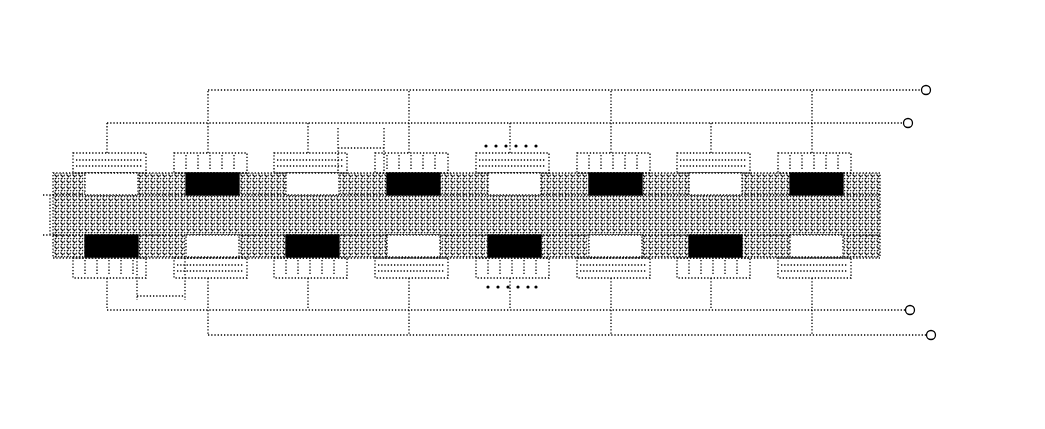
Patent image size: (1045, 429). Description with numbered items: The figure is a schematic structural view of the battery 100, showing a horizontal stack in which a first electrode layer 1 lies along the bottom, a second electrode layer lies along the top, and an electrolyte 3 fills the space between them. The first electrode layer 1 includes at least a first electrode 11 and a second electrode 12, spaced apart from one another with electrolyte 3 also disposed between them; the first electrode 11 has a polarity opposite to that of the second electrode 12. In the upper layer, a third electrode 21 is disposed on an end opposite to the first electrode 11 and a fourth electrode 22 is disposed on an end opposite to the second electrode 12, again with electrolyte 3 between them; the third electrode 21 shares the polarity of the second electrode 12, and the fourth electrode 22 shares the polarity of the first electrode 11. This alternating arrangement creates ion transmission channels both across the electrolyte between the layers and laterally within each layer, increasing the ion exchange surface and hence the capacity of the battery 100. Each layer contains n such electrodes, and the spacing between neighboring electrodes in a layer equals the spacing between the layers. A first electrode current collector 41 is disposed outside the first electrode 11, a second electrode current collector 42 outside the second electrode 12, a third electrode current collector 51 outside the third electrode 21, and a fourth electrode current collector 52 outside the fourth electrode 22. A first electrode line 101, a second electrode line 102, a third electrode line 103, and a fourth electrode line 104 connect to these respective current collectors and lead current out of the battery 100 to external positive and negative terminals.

The battery 100 is at (510, 41).
The first electrode layer 1 is at (88, 229).
The electrolyte 3 is at (885, 226).
The first electrode 11 is at (78, 255).
The second electrode 12 is at (228, 248).
The third electrode 21 is at (90, 190).
The fourth electrode 22 is at (165, 178).
The first electrode current collector 41 is at (95, 272).
The second electrode current collector 42 is at (203, 272).
The third electrode current collector 51 is at (93, 152).
The fourth electrode current collector 52 is at (195, 160).
The first electrode line 101 is at (755, 310).
The second electrode line 102 is at (875, 335).
The third electrode line 103 is at (672, 123).
The fourth electrode line 104 is at (793, 90).